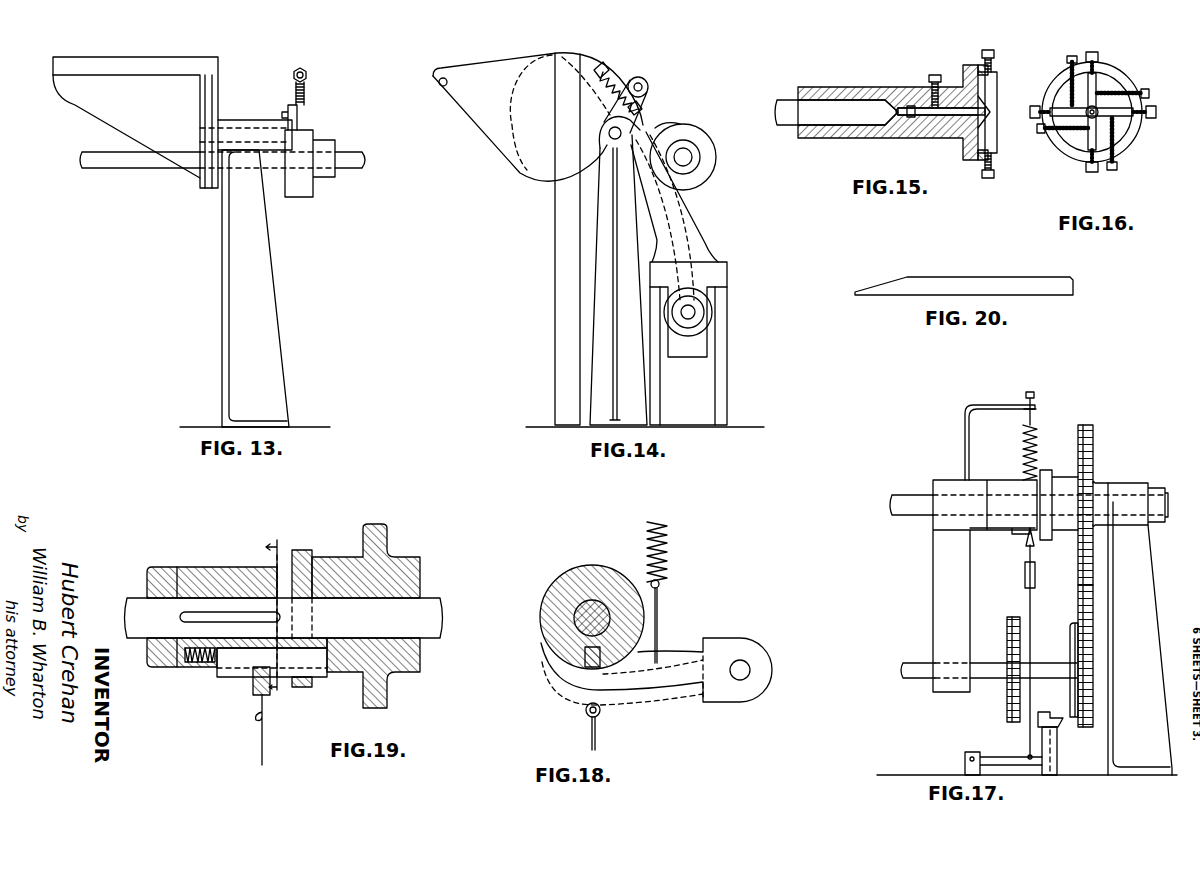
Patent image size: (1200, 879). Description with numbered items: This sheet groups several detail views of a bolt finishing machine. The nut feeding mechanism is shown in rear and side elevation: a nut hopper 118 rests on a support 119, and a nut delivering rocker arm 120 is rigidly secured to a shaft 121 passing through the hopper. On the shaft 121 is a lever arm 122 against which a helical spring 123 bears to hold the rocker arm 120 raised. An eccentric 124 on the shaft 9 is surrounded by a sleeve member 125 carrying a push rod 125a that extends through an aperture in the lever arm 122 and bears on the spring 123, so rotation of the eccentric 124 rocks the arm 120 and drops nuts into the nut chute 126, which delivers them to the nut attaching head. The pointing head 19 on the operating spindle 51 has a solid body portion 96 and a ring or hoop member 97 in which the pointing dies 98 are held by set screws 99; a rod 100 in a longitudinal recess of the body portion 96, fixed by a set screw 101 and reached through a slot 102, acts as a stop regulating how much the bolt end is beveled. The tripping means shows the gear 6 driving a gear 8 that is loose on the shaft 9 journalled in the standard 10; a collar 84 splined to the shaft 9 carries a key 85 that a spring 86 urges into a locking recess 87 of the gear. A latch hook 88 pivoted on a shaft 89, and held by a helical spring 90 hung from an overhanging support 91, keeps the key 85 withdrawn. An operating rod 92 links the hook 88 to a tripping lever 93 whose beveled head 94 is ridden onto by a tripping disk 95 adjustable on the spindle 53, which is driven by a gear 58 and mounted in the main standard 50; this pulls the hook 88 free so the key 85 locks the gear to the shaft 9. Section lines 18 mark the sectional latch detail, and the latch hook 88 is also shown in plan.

In FIG. 17, the gear 6 is at (1093, 630).
In FIG. 17, the gear 8 is at (1093, 455).
In FIG. 19, the gear 8 is at (420, 657).
In FIG. 13, the shaft 9 is at (352, 162).
In FIG. 14, the shaft 9 is at (683, 157).
In FIG. 17, the shaft 9 is at (893, 505).
In FIG. 19, the shaft 9 is at (133, 598).
In FIG. 18, the shaft 9 is at (585, 600).
In FIG. 17, the standard 10 is at (1153, 640).
In FIG. 19, the section line 18 is at (280, 616).
In FIG. 14, the pointing head 19 is at (705, 310).
In FIG. 15, the pointing head 19 is at (852, 142).
In FIG. 14, the main standard 50 is at (727, 363).
In FIG. 15, the operating spindle 51 is at (788, 95).
In FIG. 17, the operating spindle 53 is at (917, 678).
In FIG. 17, the gear 58 is at (1008, 617).
In FIG. 17, the collar 84 is at (998, 528).
In FIG. 19, the collar 84 is at (197, 567).
In FIG. 18, the collar 84 is at (555, 582).
In FIG. 19, the key 85 is at (240, 677).
In FIG. 18, the key 85 is at (588, 665).
In FIG. 19, the spring 86 is at (195, 665).
In FIG. 19, the locking recess 87 is at (318, 680).
In FIG. 20, the latch hook 88 is at (937, 276).
In FIG. 17, the latch hook 88 is at (1033, 543).
In FIG. 19, the latch hook 88 is at (273, 690).
In FIG. 18, the latch hook 88 is at (545, 657).
In FIG. 18, the shaft 89 is at (740, 670).
In FIG. 17, the helical spring 90 is at (1033, 430).
In FIG. 18, the helical spring 90 is at (667, 555).
In FIG. 17, the overhanging support 91 is at (975, 400).
In FIG. 17, the operating rod 92 is at (1027, 725).
In FIG. 19, the operating rod 92 is at (263, 747).
In FIG. 18, the operating rod 92 is at (597, 733).
In FIG. 17, the tripping lever 93 is at (1057, 752).
In FIG. 17, the beveled head 94 is at (1052, 712).
In FIG. 17, the tripping disk 95 is at (1072, 628).
In FIG. 15, the body portion 96 is at (932, 138).
In FIG. 16, the body portion 96 is at (1108, 75).
In FIG. 15, the ring or hoop member 97 is at (997, 156).
In FIG. 16, the ring or hoop member 97 is at (1120, 150).
In FIG. 15, the pointing dies 98 is at (997, 83).
In FIG. 15, the set screws 99 is at (990, 52).
In FIG. 16, the set screws 99 is at (1080, 62).
In FIG. 15, the rod 100 is at (923, 110).
In FIG. 15, the set screw 101 is at (935, 75).
In FIG. 15, the slot 102 is at (903, 116).
In FIG. 13, the nut hopper 118 is at (220, 83).
In FIG. 14, the nut hopper 118 is at (475, 123).
In FIG. 13, the support 119 is at (281, 332).
In FIG. 14, the support 119 is at (597, 308).
In FIG. 14, the nut delivering rocker arm 120 is at (520, 168).
In FIG. 13, the shaft 121 is at (268, 127).
In FIG. 14, the shaft 121 is at (625, 133).
In FIG. 13, the lever arm 122 is at (307, 115).
In FIG. 14, the lever arm 122 is at (640, 118).
In FIG. 13, the helical spring 123 is at (307, 90).
In FIG. 14, the helical spring 123 is at (615, 77).
In FIG. 14, the eccentric 124 is at (706, 172).
In FIG. 14, the sleeve member 125 is at (703, 137).
In FIG. 14, the push rod 125a is at (655, 128).
In FIG. 14, the nut chute 126 is at (687, 240).